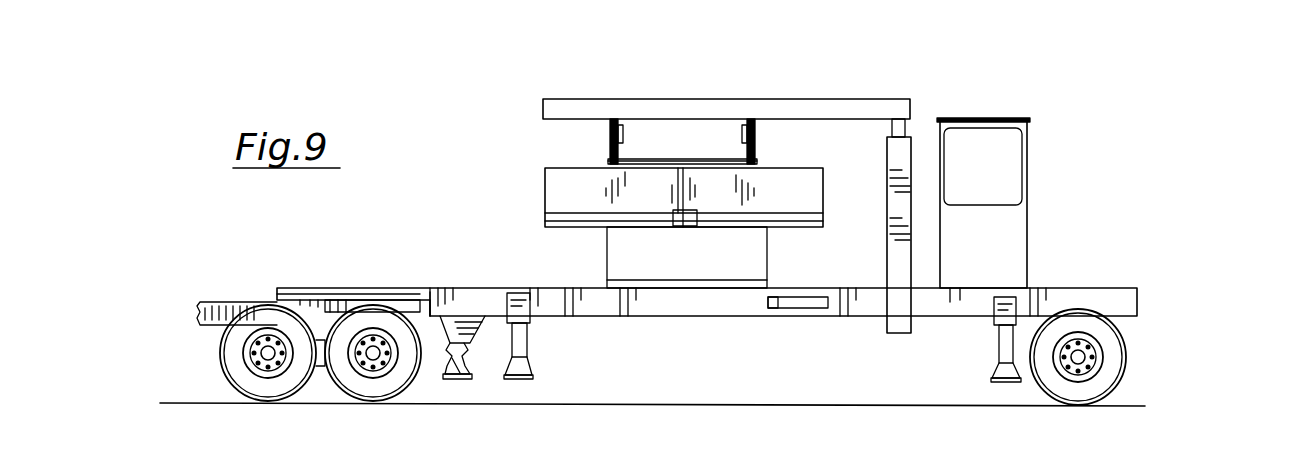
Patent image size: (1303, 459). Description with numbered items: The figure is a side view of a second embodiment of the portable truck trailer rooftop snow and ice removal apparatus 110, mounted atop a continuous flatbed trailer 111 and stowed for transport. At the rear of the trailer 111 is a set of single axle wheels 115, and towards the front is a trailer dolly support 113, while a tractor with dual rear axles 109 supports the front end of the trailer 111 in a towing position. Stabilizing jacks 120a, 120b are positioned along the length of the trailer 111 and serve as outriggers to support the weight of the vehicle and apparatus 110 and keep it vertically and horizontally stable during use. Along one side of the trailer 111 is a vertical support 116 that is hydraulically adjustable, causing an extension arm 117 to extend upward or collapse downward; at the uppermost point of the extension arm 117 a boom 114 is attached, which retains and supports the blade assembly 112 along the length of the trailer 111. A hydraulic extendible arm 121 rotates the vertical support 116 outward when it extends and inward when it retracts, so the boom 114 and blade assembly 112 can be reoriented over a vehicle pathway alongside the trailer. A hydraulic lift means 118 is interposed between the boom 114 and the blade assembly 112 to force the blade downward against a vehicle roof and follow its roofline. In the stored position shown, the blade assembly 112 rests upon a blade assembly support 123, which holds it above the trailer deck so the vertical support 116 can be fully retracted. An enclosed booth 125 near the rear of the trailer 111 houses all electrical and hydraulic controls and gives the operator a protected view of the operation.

The dual rear axles 109 is at (373, 322).
The portable truck trailer rooftop snow and ice removal apparatus 110 is at (1150, 148).
The flatbed trailer 111 is at (497, 290).
The blade assembly 112 is at (548, 205).
The trailer dolly support 113 is at (448, 360).
The boom 114 is at (575, 102).
The single axle wheels 115 is at (1118, 368).
The vertical support 116 is at (912, 332).
The extension arm 117 is at (905, 128).
The hydraulic lift means 118 is at (760, 140).
The stabilizing jack 120a is at (518, 380).
The stabilizing jack 120b is at (1012, 381).
The extendible arm 121 is at (822, 312).
The blade assembly support 123 is at (706, 268).
The enclosed booth 125 is at (1012, 238).